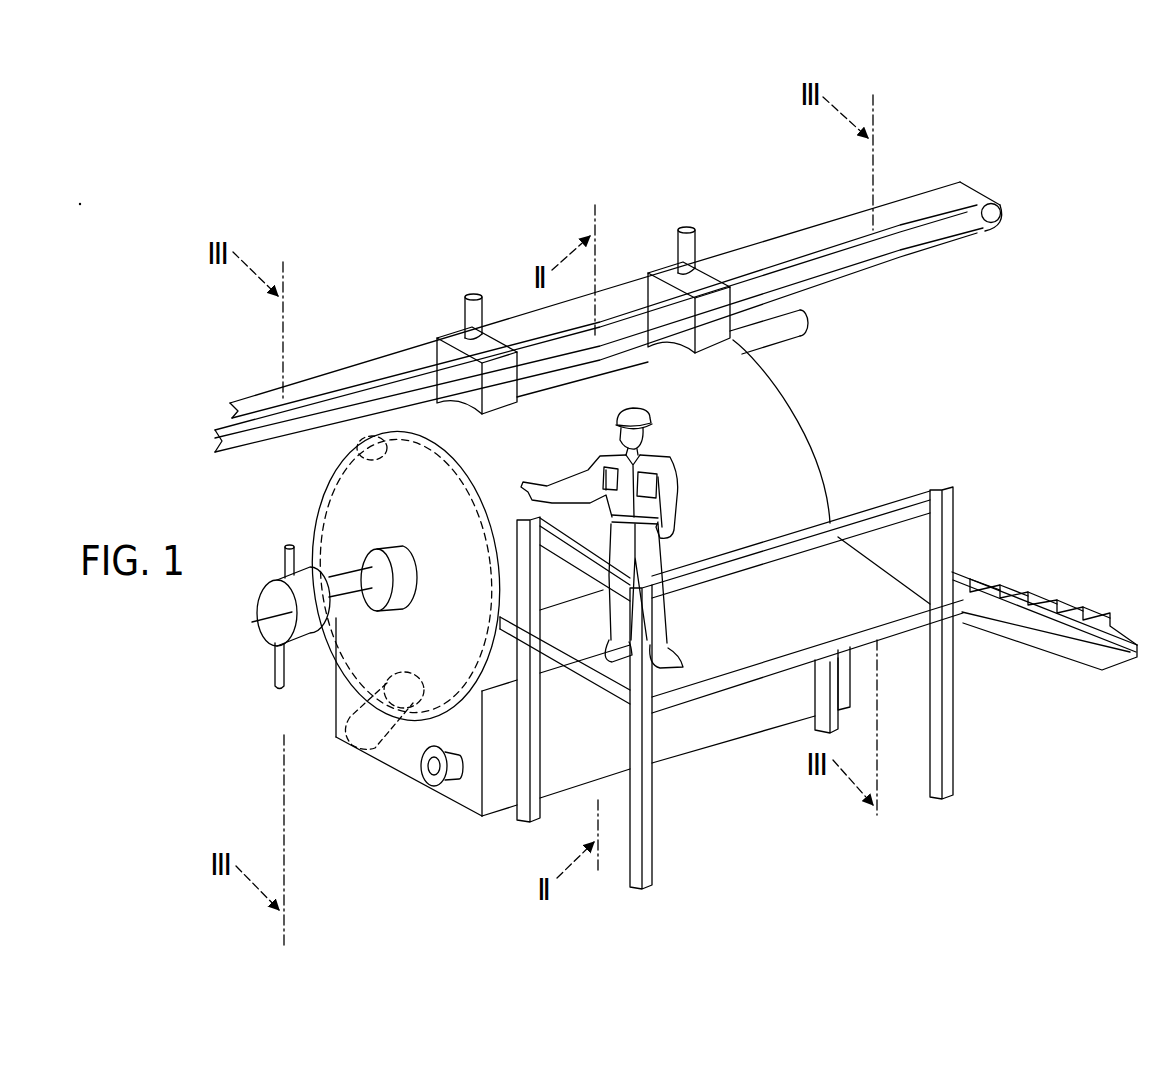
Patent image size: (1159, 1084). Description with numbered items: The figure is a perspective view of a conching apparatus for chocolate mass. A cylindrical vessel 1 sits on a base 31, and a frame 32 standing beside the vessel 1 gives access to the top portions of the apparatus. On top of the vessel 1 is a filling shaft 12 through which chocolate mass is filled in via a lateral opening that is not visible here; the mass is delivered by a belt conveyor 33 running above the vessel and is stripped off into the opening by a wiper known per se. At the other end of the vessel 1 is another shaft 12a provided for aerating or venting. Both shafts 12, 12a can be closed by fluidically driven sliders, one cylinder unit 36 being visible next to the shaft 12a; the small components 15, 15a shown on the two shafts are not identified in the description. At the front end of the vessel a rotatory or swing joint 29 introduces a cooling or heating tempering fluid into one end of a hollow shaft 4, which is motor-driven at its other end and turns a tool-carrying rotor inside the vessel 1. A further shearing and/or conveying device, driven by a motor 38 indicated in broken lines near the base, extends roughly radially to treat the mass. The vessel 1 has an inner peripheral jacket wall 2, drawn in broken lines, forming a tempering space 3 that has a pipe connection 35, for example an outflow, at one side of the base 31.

The cylindrical vessel 1 is at (812, 465).
The inner peripheral jacket wall 2 is at (377, 427).
The tempering space 3 is at (330, 451).
The hollow shaft 4 is at (346, 583).
The filling shaft 12 is at (448, 362).
The shaft 12a is at (663, 296).
The pin 15 is at (694, 229).
The pin 15a is at (474, 295).
The rotatory or swing joint 29 is at (268, 633).
The base 31 is at (498, 783).
The frame 32 is at (964, 521).
The belt conveyor 33 is at (993, 227).
The pipe connection 35 is at (434, 769).
The cylinder unit 36 is at (812, 320).
The motor 38 is at (345, 742).